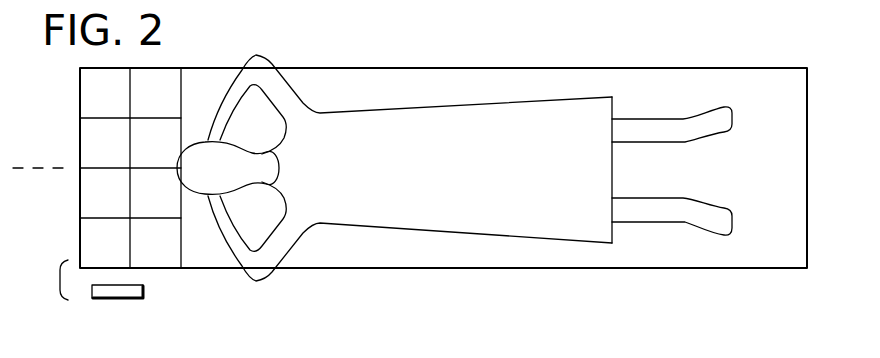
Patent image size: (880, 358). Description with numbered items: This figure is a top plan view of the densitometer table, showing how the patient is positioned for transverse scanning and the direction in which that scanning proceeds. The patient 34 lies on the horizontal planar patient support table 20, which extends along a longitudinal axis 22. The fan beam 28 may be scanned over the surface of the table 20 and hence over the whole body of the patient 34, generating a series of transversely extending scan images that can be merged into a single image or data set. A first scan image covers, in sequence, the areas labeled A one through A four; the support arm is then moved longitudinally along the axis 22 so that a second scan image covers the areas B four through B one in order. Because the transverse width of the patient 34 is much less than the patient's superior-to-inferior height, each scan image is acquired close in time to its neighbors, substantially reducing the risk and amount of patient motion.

The patient support table 20 is at (652, 248).
The longitudinal axis 22 is at (35, 172).
The fan beam 28 is at (112, 295).
The patient 34 is at (448, 140).